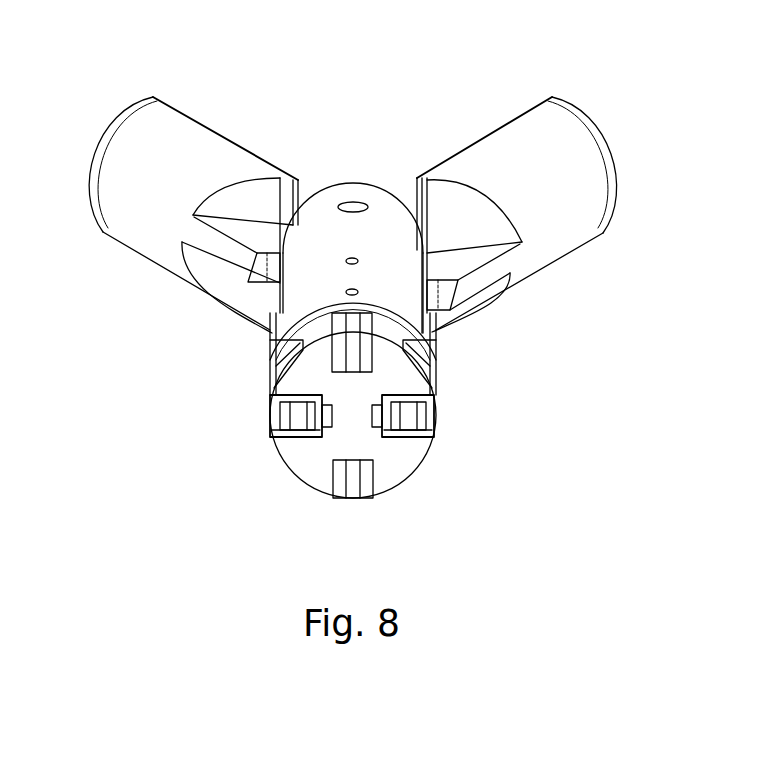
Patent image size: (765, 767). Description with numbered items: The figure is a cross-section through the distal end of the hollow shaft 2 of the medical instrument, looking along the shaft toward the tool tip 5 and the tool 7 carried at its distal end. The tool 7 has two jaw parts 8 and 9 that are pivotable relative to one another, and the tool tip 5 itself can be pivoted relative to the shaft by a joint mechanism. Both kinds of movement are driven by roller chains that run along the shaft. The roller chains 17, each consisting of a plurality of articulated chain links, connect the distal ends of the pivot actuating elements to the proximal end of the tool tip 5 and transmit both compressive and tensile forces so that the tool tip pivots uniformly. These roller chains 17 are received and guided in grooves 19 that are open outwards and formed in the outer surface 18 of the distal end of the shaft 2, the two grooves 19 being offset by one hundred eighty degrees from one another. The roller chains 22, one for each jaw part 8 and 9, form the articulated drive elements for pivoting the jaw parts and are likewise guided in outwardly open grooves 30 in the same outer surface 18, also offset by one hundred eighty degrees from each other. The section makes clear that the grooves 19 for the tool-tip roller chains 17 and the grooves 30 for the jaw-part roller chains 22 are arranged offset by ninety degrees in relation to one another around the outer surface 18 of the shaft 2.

The tool 7 is at (614, 72).
The jaw part 9 is at (120, 148).
The jaw part 8 is at (583, 150).
The tool tip 5 is at (360, 160).
The hollow shaft 2 is at (424, 466).
The outer surface 18 is at (292, 472).
The roller chain 17 is at (366, 357).
The groove 19 is at (338, 362).
The roller chain 22 is at (300, 415).
The groove 30 is at (283, 430).